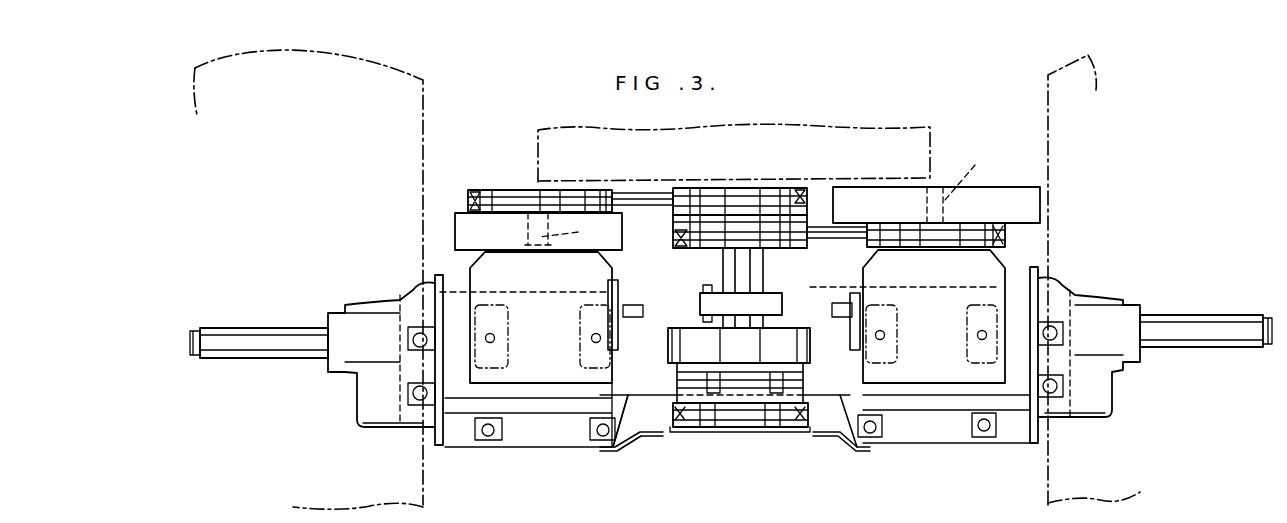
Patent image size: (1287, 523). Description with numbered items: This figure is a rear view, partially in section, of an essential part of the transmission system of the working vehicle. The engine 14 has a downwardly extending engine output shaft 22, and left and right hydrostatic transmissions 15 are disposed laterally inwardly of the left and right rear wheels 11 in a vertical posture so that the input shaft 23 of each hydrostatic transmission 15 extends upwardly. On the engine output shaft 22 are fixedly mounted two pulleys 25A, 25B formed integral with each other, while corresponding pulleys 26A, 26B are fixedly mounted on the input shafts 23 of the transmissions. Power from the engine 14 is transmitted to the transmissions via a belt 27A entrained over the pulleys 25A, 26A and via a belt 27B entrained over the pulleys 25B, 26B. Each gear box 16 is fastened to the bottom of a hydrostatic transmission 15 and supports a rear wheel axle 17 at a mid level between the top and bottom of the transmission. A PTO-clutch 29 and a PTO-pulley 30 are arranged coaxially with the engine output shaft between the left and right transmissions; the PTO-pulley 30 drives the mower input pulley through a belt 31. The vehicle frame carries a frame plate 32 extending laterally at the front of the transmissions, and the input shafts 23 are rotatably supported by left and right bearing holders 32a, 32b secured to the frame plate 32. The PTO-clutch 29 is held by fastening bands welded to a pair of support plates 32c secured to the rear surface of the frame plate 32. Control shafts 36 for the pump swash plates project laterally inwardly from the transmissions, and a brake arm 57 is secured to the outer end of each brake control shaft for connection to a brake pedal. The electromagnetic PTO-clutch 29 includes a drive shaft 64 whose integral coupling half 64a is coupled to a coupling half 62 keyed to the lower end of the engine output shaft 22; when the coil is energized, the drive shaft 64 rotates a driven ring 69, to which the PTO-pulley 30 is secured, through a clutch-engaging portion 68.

The rear wheel 11 is at (413, 116).
The engine 14 is at (922, 150).
The hydrostatic transmission 15 is at (580, 278).
The gear box 16 is at (458, 447).
The rear wheel axle 17 is at (275, 330).
The engine output shaft 22 is at (758, 246).
The input shaft 23 is at (769, 194).
The pulley 25A is at (768, 195).
The pulley 25B is at (716, 240).
The pulley 26A is at (512, 200).
The pulley 26B is at (965, 228).
The belt 27A is at (645, 200).
The belt 27B is at (822, 235).
The PTO-clutch 29 is at (806, 370).
The PTO-pulley 30 is at (730, 412).
The belt 31 is at (690, 430).
The frame plate 32 is at (652, 290).
The bearing holder 32a is at (465, 228).
The bearing holder 32b is at (883, 200).
The support plate 32c is at (683, 335).
The control shaft 36 is at (622, 310).
The brake arm 57 is at (648, 433).
The coupling half 62 is at (772, 300).
The drive shaft 64 is at (743, 322).
The coupling half 64a is at (700, 306).
The clutch-engaging portion 68 is at (795, 400).
The driven ring 69 is at (700, 395).